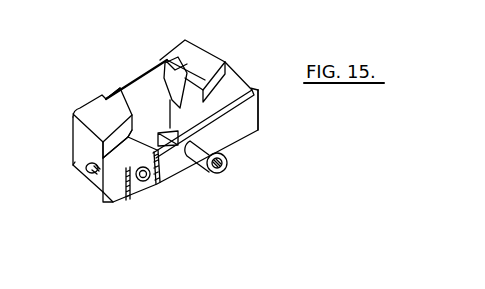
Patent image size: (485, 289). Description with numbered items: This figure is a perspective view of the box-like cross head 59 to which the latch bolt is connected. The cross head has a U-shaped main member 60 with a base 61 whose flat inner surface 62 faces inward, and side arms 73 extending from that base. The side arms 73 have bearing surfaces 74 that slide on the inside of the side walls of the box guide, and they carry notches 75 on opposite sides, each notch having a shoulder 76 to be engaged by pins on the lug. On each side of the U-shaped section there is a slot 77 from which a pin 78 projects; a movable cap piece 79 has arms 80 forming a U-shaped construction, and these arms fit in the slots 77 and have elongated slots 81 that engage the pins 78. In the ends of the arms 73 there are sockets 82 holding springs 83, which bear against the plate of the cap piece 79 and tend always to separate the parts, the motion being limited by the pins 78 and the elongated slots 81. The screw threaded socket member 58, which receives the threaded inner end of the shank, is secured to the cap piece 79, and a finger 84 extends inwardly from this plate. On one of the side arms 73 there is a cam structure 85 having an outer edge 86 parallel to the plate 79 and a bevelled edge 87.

The socket member 58 is at (198, 158).
The cross head 59 is at (250, 71).
The U-shaped main member 60 is at (127, 63).
The base 61 is at (112, 94).
The flat inner surface 62 is at (116, 96).
The side arms 73 is at (100, 118).
The bearing surfaces 74 is at (88, 189).
The notches 75 is at (223, 83).
The shoulders 76 is at (123, 128).
The slots 77 is at (74, 164).
The pin 78 is at (92, 172).
The movable cap piece 79 is at (246, 141).
The arms 80 is at (121, 176).
The elongated slots 81 is at (98, 178).
The sockets 82 is at (143, 184).
The springs 83 is at (161, 188).
The finger 84 is at (183, 139).
The cam structure 85 is at (180, 86).
The outer edge 86 is at (232, 112).
The bevelled edge 87 is at (168, 96).